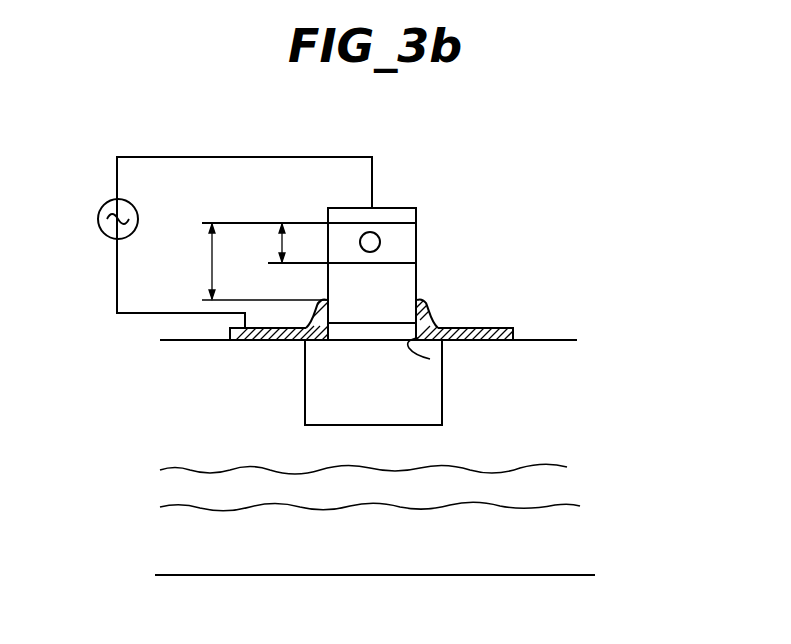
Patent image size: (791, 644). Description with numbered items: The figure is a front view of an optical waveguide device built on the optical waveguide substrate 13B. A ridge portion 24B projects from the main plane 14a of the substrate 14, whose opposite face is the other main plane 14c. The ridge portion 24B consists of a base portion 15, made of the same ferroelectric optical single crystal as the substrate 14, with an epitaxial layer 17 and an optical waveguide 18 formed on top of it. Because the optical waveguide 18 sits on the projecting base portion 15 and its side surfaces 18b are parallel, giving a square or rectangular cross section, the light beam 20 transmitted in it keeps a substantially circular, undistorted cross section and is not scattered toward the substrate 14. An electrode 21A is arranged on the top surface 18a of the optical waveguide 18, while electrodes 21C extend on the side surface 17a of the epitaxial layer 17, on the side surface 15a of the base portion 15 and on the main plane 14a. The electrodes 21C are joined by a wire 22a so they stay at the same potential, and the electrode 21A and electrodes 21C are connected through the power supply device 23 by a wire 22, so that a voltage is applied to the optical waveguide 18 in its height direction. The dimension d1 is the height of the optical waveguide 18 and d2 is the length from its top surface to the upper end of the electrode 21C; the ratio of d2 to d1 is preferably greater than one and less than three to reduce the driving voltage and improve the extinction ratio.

The optical waveguide substrate 13B is at (581, 166).
The substrate 14 is at (573, 337).
The main plane 14a is at (548, 336).
The other main plane 14c is at (427, 575).
The base portion 15 is at (388, 345).
The side surface of base portion 15a is at (430, 359).
The epitaxial layer 17 is at (410, 289).
The side surface of epitaxial layer 17a is at (326, 301).
The optical waveguide 18 is at (412, 253).
The top surface of optical waveguide 18a is at (393, 212).
The side surface of optical waveguide 18b is at (420, 222).
The light beam 20 is at (380, 242).
The electrode 21A is at (378, 209).
The electrodes 21C is at (492, 338).
The wire 22 is at (298, 157).
The wire 22a is at (442, 407).
The power supply device 23 is at (97, 218).
The ridge portion 24B is at (457, 166).
The height of optical waveguide d1 is at (271, 243).
The length from top surface of optical waveguide to upper end of electrode d2 is at (251, 262).